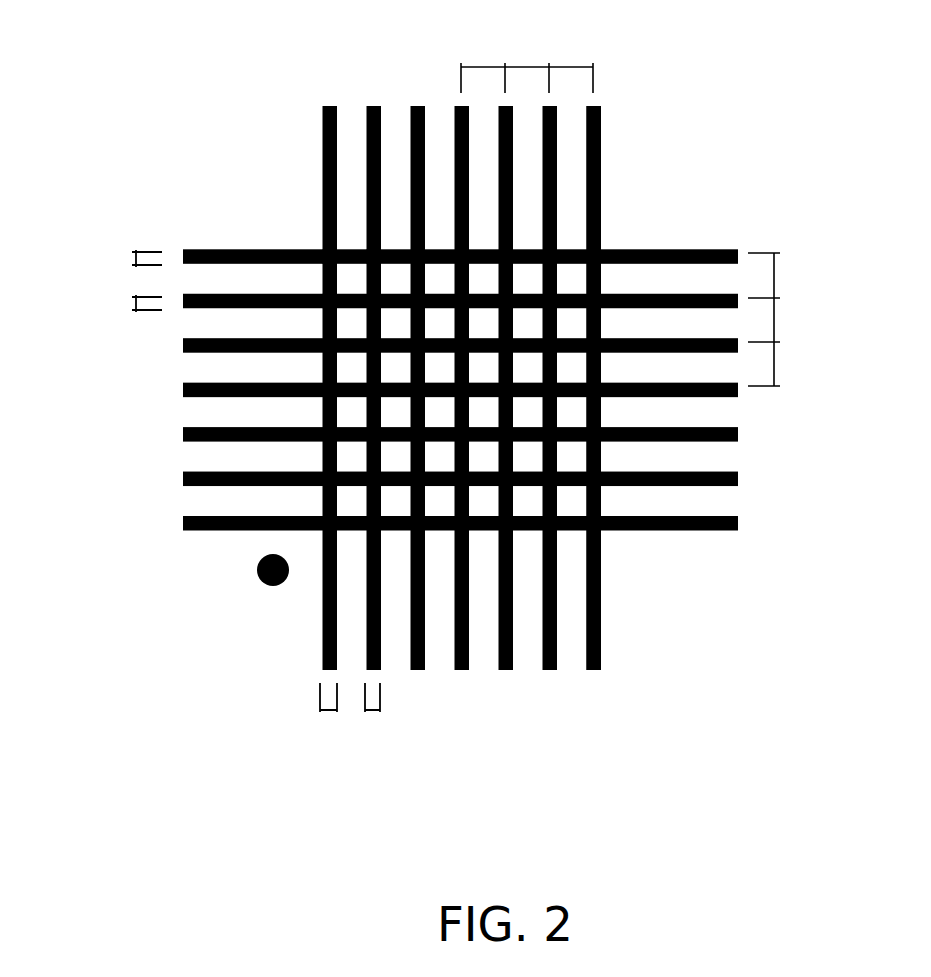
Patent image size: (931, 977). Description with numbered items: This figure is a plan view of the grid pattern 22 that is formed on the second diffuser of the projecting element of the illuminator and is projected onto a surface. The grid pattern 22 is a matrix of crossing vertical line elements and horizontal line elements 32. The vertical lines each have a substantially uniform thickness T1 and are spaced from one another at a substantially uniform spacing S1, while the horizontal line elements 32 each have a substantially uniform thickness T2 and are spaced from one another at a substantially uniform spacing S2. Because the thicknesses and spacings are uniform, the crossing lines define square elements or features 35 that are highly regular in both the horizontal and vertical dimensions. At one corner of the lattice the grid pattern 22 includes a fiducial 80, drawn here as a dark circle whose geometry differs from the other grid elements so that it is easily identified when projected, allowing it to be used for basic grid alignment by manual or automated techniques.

The grid pattern 22 is at (501, 388).
The horizontal line elements 32 is at (738, 435).
The square elements or features 35 is at (292, 200).
The fiducial 80 is at (243, 590).
The spacing of vertical line elements S1 is at (480, 66).
The spacing of horizontal line elements S2 is at (777, 273).
The thickness of vertical line elements T1 is at (372, 712).
The thickness of horizontal line elements T2 is at (132, 302).